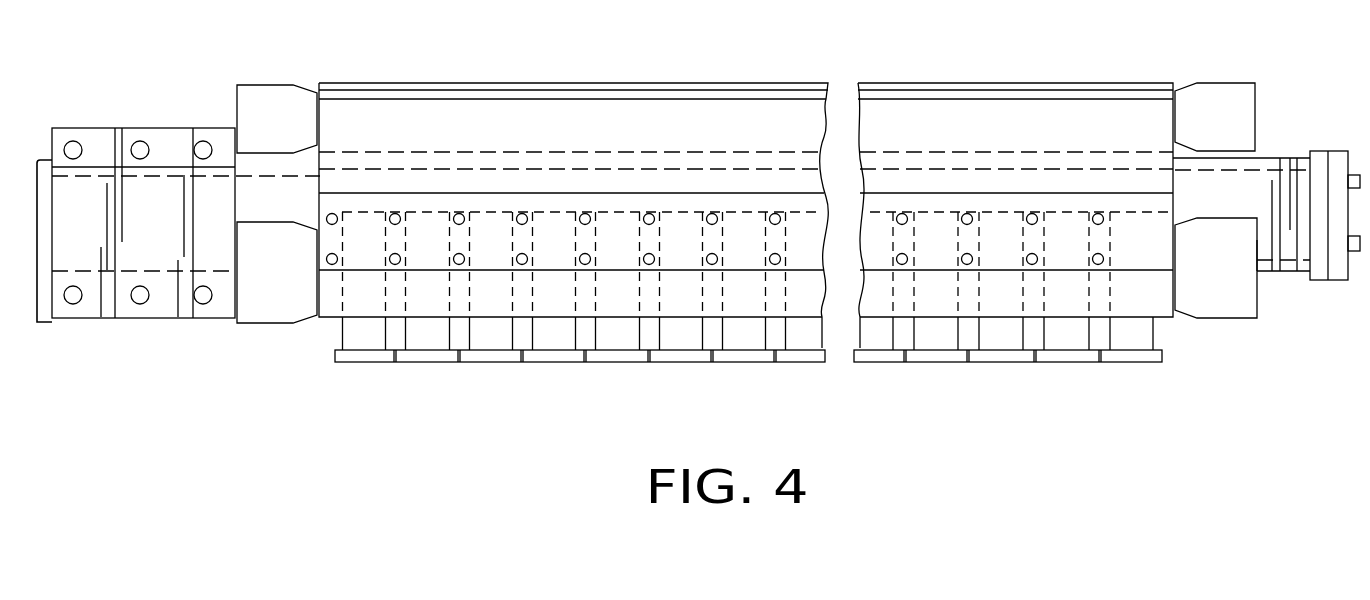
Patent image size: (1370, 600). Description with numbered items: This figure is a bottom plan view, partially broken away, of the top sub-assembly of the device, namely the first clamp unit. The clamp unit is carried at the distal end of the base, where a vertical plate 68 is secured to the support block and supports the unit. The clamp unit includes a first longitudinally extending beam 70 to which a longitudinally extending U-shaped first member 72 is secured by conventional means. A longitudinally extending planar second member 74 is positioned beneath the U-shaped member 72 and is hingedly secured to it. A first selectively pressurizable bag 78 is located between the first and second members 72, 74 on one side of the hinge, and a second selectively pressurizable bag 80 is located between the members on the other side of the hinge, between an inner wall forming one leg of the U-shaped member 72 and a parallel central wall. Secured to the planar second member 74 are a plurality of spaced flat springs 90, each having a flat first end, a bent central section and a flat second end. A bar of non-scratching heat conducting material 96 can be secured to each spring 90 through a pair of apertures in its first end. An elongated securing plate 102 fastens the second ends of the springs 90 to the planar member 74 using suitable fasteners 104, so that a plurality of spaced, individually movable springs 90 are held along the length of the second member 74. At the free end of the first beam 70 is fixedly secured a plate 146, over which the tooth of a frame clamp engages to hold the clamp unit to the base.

The vertical plate 68 is at (48, 298).
The U-shaped first member 72 is at (163, 187).
The planar second member 74 is at (518, 130).
The fasteners 104 is at (458, 213).
The elongated securing plate 102 is at (525, 208).
The flat springs 90 is at (618, 335).
The bar of non-scratching heat conducting material 96 is at (1010, 356).
The first selectively pressurizable bag 78 is at (1213, 100).
The second selectively pressurizable bag 80 is at (1222, 295).
The first longitudinally extending beam 70 is at (1272, 185).
The plate 146 is at (1336, 265).